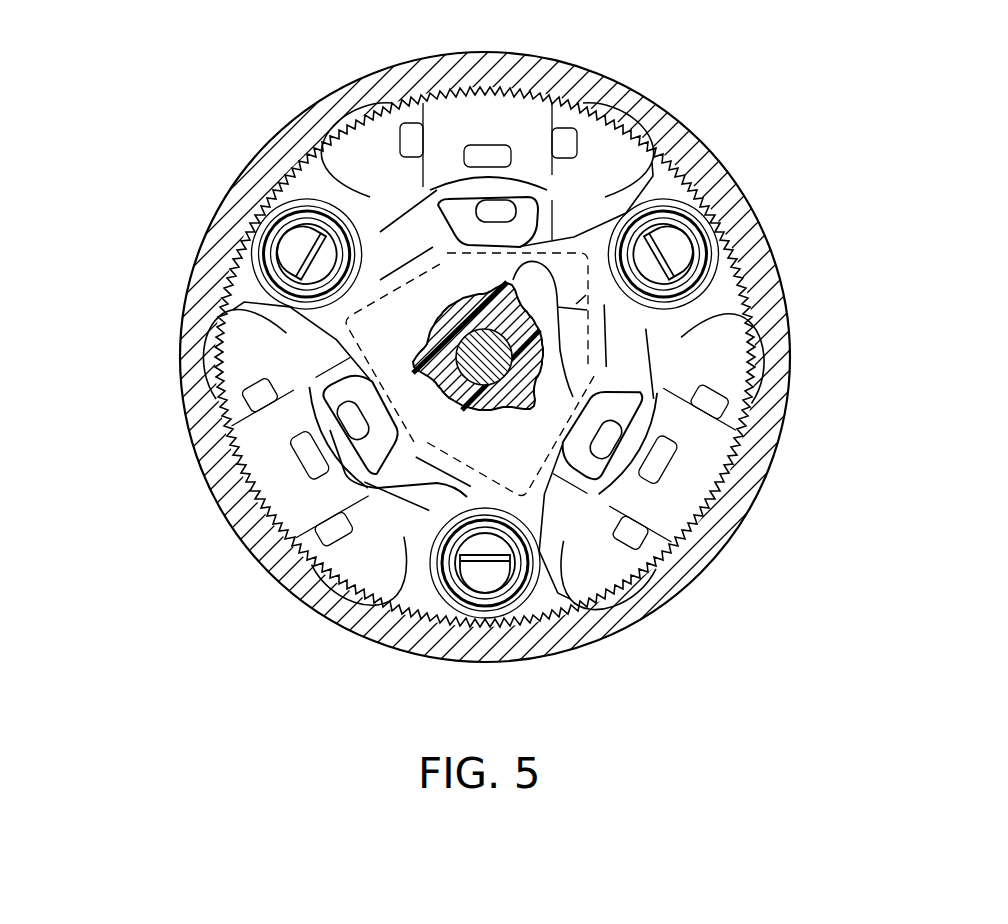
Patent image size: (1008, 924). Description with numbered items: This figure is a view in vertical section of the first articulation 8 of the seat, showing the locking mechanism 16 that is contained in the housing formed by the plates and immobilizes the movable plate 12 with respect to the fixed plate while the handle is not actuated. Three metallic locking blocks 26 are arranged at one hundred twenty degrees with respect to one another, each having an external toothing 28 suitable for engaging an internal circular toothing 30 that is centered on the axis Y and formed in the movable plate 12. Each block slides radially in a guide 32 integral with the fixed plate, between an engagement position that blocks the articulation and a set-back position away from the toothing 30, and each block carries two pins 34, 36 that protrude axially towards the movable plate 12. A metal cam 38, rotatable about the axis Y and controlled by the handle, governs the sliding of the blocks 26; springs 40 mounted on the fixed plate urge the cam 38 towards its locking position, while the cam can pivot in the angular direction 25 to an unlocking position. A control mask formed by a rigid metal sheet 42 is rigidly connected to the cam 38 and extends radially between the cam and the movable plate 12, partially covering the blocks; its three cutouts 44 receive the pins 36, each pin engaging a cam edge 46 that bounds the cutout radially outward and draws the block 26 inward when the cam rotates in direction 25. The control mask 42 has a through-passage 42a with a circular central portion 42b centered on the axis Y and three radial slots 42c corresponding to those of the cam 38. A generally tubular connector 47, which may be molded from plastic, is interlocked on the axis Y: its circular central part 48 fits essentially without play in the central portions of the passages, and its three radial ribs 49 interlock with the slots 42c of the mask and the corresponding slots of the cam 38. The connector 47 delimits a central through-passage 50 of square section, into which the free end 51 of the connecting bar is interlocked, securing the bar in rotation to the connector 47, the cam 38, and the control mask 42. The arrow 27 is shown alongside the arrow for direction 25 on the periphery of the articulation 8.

The first articulation 8 is at (262, 117).
The movable plate 12 is at (735, 445).
The locking mechanism 16 is at (662, 162).
The angular direction 25 is at (84, 240).
The rotation direction 27 is at (88, 496).
The locking blocks 26 is at (385, 130).
The external toothing 28 is at (428, 92).
The internal circular toothing 30 is at (778, 292).
The guide 32 is at (437, 250).
The pin 34 is at (505, 152).
The pin 36 is at (600, 200).
The cam 38 is at (560, 470).
The springs 40 is at (253, 244).
The control mask 42 is at (560, 350).
The through-passage 42a is at (425, 336).
The circular central portion 42b is at (484, 430).
The radial slots 42c is at (400, 385).
The axis Y is at (543, 314).
The cutouts 44 is at (400, 236).
The cam edge 46 is at (435, 180).
The connector 47 is at (476, 428).
The circular central part 48 is at (397, 490).
The radial ribs 49 is at (470, 258).
The central through-passage 50 is at (400, 368).
The free end 51 is at (460, 395).